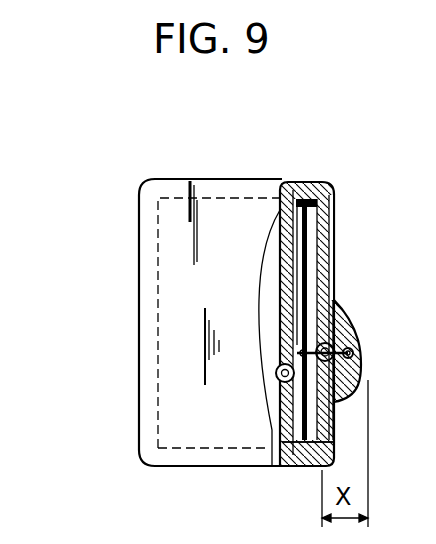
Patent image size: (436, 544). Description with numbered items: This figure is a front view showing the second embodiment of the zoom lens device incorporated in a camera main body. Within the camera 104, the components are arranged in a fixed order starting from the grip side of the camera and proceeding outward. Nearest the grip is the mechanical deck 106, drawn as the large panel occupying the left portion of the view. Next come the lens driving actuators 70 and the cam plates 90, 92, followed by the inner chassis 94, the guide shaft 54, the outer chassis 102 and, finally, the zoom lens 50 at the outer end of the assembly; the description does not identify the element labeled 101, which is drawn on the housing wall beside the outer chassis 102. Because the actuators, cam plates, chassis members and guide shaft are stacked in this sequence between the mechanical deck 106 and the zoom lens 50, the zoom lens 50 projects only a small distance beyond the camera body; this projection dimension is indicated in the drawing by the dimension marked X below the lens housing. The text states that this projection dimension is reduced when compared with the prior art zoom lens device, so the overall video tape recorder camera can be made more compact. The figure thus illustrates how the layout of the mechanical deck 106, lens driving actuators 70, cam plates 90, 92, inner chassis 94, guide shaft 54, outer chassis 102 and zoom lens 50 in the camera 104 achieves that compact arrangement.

The camera 104 is at (122, 199).
The mechanical deck 106 is at (163, 408).
The inner chassis 94 is at (297, 184).
The outer chassis 102 is at (316, 184).
The housing 101 is at (334, 228).
The guide shaft 54 is at (334, 306).
The zoom lens 50 is at (354, 335).
The cam plate 90 is at (296, 317).
The cam plate 92 is at (304, 323).
The lens driving actuator 70 is at (279, 467).